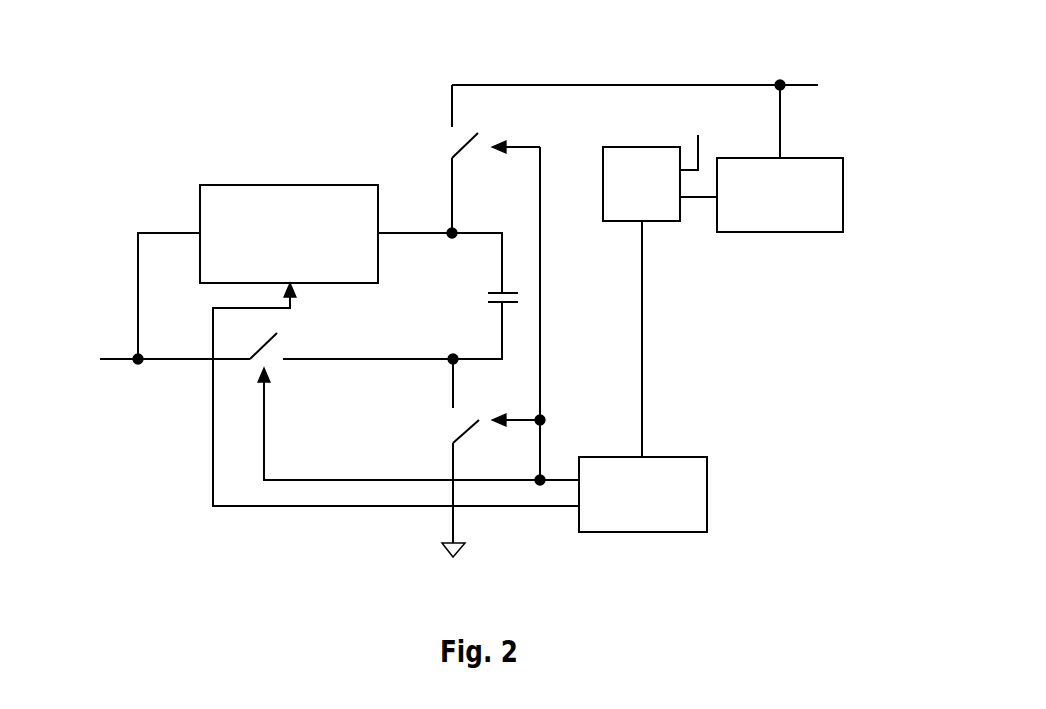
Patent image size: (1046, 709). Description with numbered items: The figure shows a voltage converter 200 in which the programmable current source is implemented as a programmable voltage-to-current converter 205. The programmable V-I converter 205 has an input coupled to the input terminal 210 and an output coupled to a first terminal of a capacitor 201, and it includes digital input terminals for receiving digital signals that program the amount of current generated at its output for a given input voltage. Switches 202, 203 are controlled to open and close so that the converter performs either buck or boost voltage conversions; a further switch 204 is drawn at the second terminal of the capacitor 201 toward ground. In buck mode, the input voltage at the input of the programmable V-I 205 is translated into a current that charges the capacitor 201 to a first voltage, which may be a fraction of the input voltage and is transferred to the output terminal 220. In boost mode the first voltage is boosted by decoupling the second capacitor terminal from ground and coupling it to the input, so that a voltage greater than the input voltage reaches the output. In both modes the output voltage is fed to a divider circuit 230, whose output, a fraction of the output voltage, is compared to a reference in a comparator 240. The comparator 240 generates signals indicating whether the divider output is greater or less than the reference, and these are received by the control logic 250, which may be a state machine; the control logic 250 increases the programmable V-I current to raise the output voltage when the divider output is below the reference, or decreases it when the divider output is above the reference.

The voltage converter 200 is at (170, 98).
The capacitor 201 is at (493, 304).
The switch 202 is at (272, 346).
The switch 203 is at (468, 153).
The switch S3 204 is at (465, 435).
The programmable voltage-to-current converter 205 is at (247, 185).
The input terminal 210 is at (117, 363).
The output terminal 220 is at (803, 84).
The divider circuit 230 is at (807, 233).
The comparator 240 is at (659, 221).
The control logic 250 is at (670, 455).